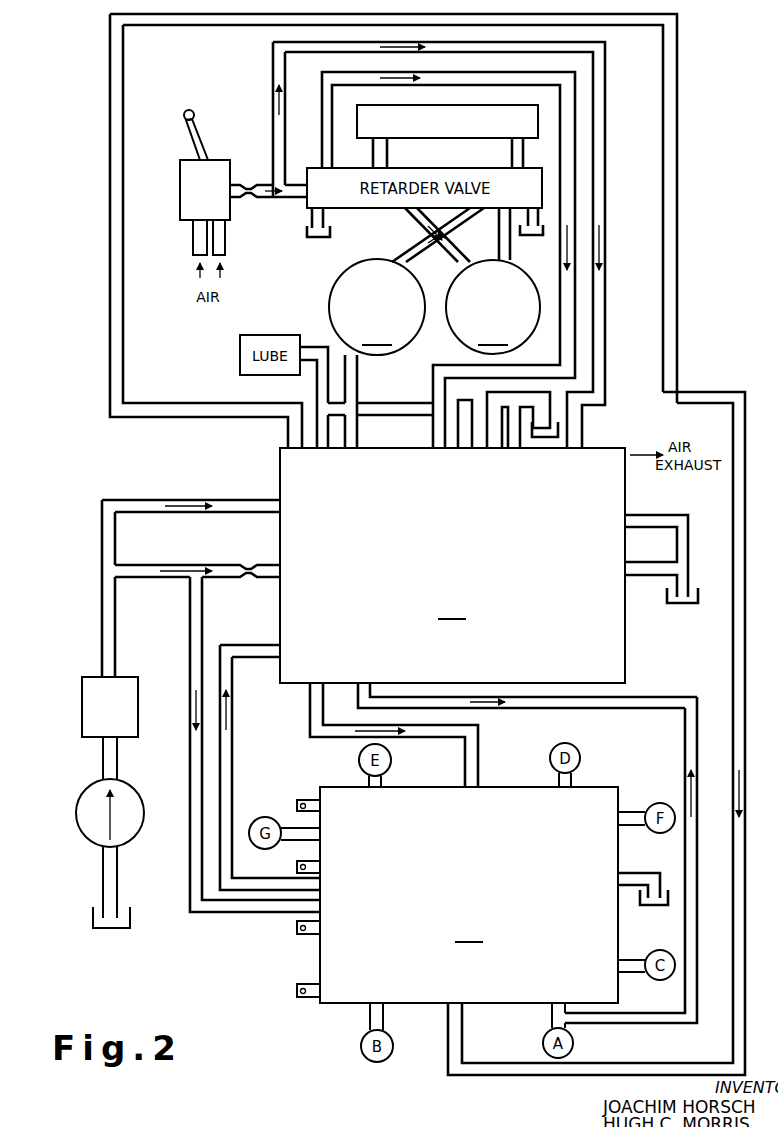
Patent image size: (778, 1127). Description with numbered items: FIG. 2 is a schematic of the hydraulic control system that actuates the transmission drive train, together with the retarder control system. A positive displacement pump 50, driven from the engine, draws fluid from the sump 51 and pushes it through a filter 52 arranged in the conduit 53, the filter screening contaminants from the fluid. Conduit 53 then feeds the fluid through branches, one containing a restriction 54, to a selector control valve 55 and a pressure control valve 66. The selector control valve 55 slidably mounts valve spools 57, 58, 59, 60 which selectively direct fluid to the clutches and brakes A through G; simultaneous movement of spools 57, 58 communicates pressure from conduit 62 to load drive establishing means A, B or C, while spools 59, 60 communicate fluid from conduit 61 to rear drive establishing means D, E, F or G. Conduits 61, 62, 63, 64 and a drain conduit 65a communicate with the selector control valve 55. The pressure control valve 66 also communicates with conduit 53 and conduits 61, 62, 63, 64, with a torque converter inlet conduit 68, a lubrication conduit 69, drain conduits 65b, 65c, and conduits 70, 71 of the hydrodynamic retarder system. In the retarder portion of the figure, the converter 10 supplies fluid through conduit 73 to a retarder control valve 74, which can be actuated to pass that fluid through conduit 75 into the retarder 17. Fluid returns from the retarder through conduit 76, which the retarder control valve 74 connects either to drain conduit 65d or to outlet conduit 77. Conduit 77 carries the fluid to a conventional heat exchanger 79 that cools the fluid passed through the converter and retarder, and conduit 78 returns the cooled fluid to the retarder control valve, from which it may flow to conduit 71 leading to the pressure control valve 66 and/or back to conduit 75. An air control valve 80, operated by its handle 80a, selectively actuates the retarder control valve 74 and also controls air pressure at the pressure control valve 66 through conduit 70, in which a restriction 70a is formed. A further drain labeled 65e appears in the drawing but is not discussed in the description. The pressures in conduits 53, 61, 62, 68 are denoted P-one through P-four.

The converter 10 is at (377, 307).
The retarder 17 is at (493, 307).
The positive displacement pump 50 is at (95, 792).
The sump 51 is at (93, 918).
The filter 52 is at (82, 690).
The conduit 53 is at (108, 610).
The restriction 54 is at (248, 566).
The selector control valve 55 is at (469, 895).
The valve spool 57 is at (297, 990).
The valve spool 58 is at (297, 930).
The valve spool 59 is at (300, 866).
The valve spool 60 is at (220, 18).
The conduit 61 is at (316, 705).
The conduit 62 is at (670, 297).
The conduit 63 is at (222, 782).
The conduit 64 is at (690, 758).
The drain conduit 65a is at (645, 876).
The drain conduit 65b is at (700, 490).
The drain conduit 65c is at (525, 440).
The drain conduit 65d is at (533, 217).
The exhaust port 65e is at (325, 238).
The pressure control valve 66 is at (452, 565).
The torque converter inlet conduit 68 is at (352, 440).
The lubrication conduit 69 is at (420, 408).
The conduit 70 is at (253, 200).
The restriction 70a is at (258, 260).
The conduit 71 is at (568, 296).
The conduit 73 is at (418, 237).
The retarder control valve 74 is at (488, 200).
The conduit 75 is at (441, 240).
The conduit 76 is at (507, 252).
The conduit 77 is at (523, 152).
The conduit 78 is at (375, 153).
The heat exchanger 79 is at (540, 122).
The air control valve 80 is at (197, 195).
The handle 80a is at (198, 130).